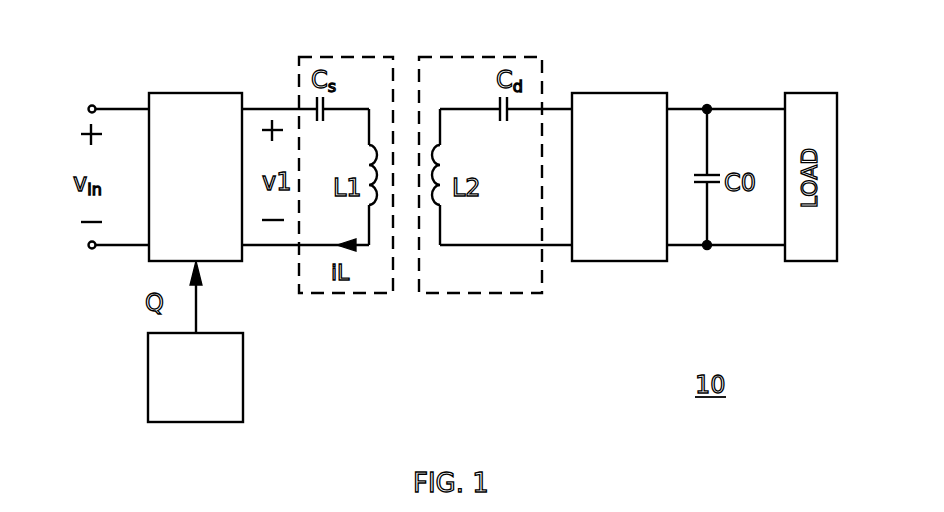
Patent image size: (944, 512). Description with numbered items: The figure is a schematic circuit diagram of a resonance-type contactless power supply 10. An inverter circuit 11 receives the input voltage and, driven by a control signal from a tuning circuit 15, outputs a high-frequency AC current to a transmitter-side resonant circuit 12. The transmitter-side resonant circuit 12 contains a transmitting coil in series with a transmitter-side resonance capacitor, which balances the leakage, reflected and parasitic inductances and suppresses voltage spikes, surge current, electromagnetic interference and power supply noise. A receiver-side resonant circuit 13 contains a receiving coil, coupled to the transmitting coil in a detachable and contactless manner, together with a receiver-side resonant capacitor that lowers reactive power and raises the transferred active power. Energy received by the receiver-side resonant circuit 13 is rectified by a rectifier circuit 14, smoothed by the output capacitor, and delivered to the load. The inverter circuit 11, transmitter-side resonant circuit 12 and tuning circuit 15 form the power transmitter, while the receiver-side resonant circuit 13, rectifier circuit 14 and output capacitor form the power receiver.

The resonance-type contactless power supply 10 is at (710, 385).
The inverter circuit 11 is at (181, 93).
The transmitter-side resonant circuit 12 is at (337, 57).
The receiver-side resonant circuit 13 is at (497, 57).
The rectifier circuit 14 is at (653, 93).
The tuning circuit 15 is at (243, 405).